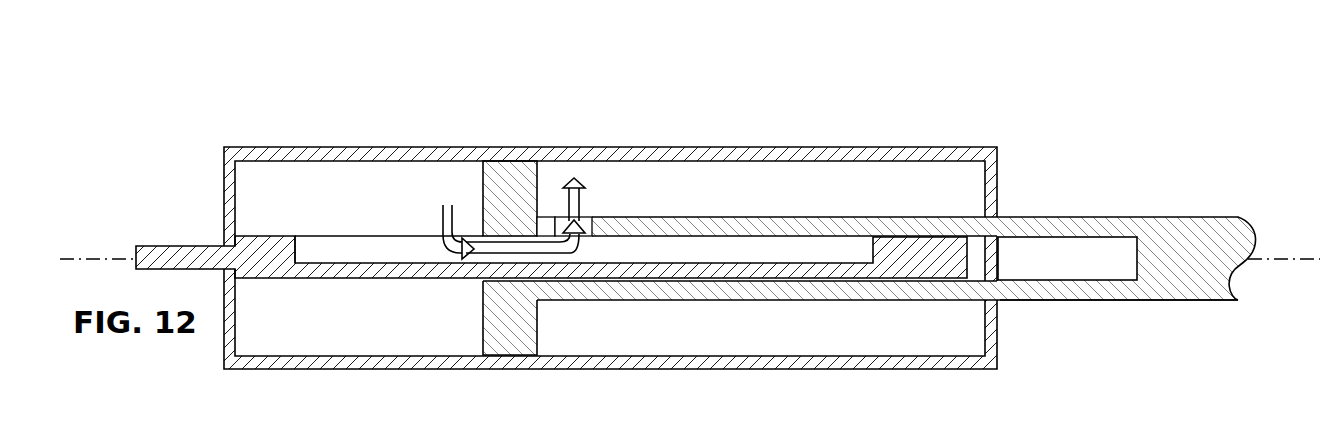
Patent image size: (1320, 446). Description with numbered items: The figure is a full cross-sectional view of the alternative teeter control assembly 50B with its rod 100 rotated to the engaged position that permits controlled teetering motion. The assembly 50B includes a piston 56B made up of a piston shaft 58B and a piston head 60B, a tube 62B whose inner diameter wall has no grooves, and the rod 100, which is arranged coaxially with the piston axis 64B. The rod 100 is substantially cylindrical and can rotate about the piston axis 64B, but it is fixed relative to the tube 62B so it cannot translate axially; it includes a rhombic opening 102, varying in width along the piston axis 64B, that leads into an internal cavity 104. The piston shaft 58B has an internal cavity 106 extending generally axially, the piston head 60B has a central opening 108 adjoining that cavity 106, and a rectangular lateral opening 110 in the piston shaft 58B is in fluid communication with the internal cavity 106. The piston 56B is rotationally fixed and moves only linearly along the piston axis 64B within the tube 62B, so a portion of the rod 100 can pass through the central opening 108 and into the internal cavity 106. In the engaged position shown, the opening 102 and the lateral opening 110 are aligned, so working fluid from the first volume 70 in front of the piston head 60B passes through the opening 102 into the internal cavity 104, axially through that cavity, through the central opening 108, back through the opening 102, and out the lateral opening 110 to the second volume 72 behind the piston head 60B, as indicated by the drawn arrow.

The teeter control assembly 50B is at (1033, 106).
The piston 56B is at (1186, 220).
The piston shaft 58B is at (1088, 301).
The piston head 60B is at (513, 175).
The tube 62B is at (945, 155).
The piston axis 64B is at (1308, 255).
The first volume 70 is at (337, 211).
The second volume 72 is at (731, 202).
The rod 100 is at (255, 245).
The opening 102 is at (296, 240).
The internal cavity 104 is at (414, 247).
The internal cavity 106 is at (1076, 243).
The central opening 108 is at (483, 281).
The lateral opening 110 is at (587, 230).